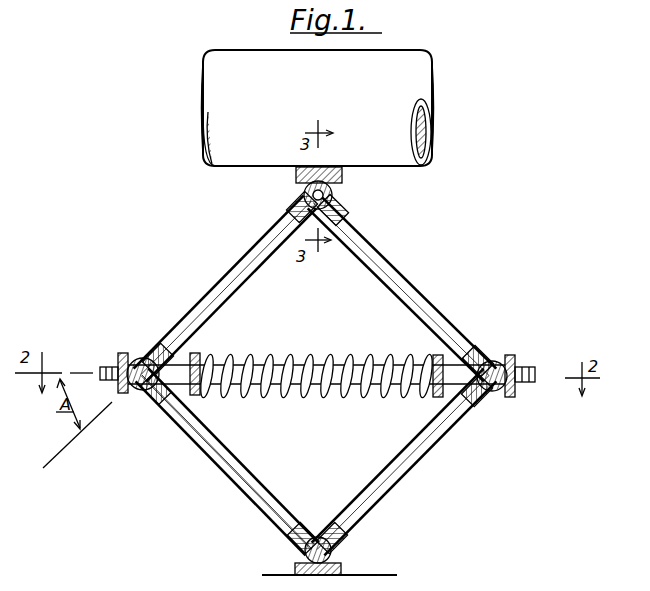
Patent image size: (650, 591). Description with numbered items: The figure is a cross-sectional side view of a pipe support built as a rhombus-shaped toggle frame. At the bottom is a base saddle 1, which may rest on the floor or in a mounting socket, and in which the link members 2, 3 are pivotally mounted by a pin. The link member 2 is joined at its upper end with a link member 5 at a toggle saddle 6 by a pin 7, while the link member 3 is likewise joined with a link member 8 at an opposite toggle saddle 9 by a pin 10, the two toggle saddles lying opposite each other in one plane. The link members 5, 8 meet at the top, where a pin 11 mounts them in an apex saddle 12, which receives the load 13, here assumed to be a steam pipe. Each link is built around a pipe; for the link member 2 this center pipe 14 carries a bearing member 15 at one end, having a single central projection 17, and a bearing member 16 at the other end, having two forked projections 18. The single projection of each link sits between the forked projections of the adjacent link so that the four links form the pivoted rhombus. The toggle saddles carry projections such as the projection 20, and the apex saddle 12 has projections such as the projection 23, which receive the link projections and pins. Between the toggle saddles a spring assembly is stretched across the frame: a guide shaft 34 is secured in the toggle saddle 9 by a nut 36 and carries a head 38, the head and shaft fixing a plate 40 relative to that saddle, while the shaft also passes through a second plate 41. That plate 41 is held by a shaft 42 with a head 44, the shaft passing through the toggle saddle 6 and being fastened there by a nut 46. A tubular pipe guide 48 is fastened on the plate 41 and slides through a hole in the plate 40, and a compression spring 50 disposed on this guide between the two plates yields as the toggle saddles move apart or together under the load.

The base saddle 1 is at (342, 565).
The link member 2 is at (238, 466).
The link member 3 is at (412, 460).
The link member 5 is at (237, 268).
The toggle saddle 6 is at (128, 358).
The pin 7 is at (126, 395).
The link member 8 is at (412, 280).
The toggle saddle 9 is at (512, 355).
The pin 10 is at (490, 398).
The pin 11 is at (335, 200).
The apex saddle 12 is at (342, 182).
The load 13 is at (430, 80).
The pipe 14 is at (213, 472).
The bearing member 15 is at (158, 398).
The bearing member 16 is at (320, 535).
The central projection 17 is at (134, 355).
The forked projections 18 is at (296, 545).
The projection 20 is at (132, 352).
The projection 23 is at (298, 193).
The guide shaft 34 is at (486, 358).
The nut 36 is at (535, 368).
The head 38 is at (198, 396).
The plate 40 is at (208, 362).
The plate 41 is at (400, 398).
The shaft 42 is at (170, 328).
The head 44 is at (474, 350).
The nut 46 is at (112, 365).
The tubular pipe guide 48 is at (178, 420).
The compression spring 50 is at (306, 354).